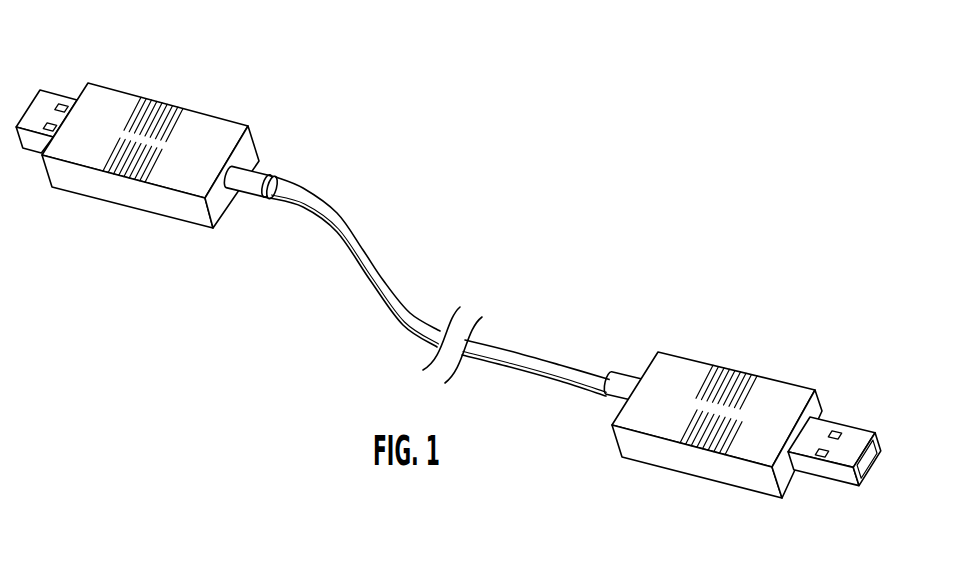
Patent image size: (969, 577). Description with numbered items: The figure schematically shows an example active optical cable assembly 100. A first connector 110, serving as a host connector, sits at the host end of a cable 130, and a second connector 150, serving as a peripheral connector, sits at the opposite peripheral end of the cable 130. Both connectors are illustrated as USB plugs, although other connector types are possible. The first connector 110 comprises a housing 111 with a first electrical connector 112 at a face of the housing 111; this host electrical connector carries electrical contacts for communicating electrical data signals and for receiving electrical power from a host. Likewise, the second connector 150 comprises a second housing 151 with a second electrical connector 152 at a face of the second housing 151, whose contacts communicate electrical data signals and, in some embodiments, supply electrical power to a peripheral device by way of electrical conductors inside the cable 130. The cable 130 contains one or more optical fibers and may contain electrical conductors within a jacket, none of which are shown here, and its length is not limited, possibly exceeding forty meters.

The active optical cable assembly 100 is at (610, 106).
The first connector 110 is at (203, 90).
The housing 111 is at (118, 83).
The first electrical connector 112 is at (60, 86).
The cable 130 is at (352, 140).
The second connector 150 is at (761, 345).
The second housing 151 is at (688, 349).
The second electrical connector 152 is at (848, 415).